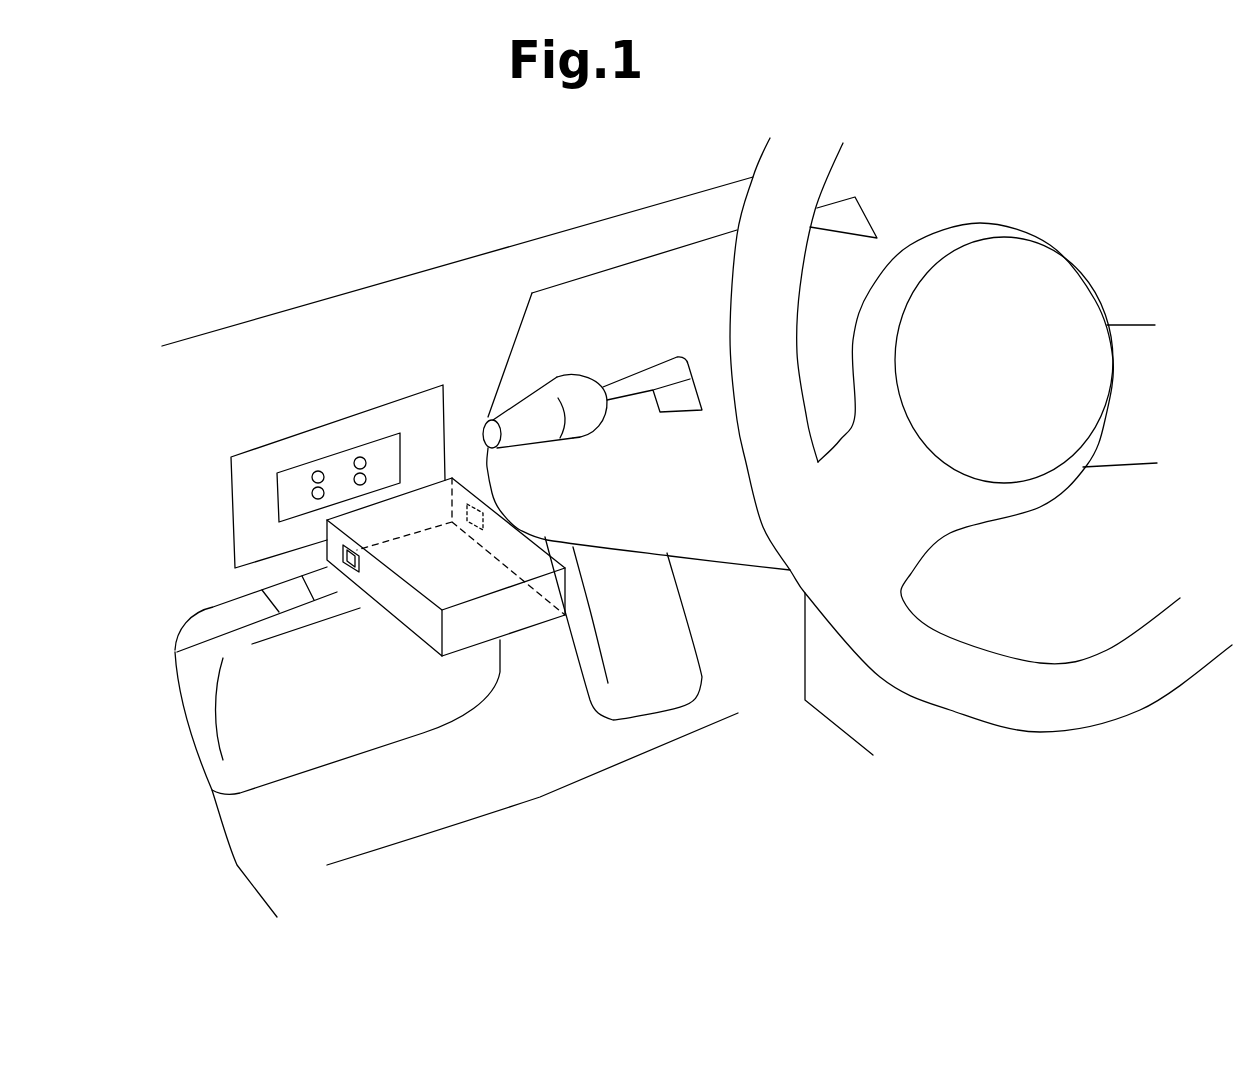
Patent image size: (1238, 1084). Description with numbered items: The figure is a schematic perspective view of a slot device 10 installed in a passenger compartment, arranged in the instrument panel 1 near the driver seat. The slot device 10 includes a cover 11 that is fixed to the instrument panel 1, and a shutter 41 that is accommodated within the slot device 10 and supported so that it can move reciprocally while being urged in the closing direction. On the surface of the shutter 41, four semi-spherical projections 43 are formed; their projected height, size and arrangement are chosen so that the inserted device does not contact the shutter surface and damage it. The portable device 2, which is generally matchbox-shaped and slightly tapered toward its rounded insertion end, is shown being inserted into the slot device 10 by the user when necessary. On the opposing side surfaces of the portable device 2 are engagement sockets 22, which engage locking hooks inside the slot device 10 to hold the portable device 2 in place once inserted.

The instrument panel 1 is at (492, 263).
The slot device 10 is at (304, 448).
The cover 11 is at (425, 386).
The shutter 41 is at (290, 471).
The semi-spherical projections 43 is at (360, 456).
The portable device 2 is at (443, 590).
The engagement socket 22 is at (343, 572).